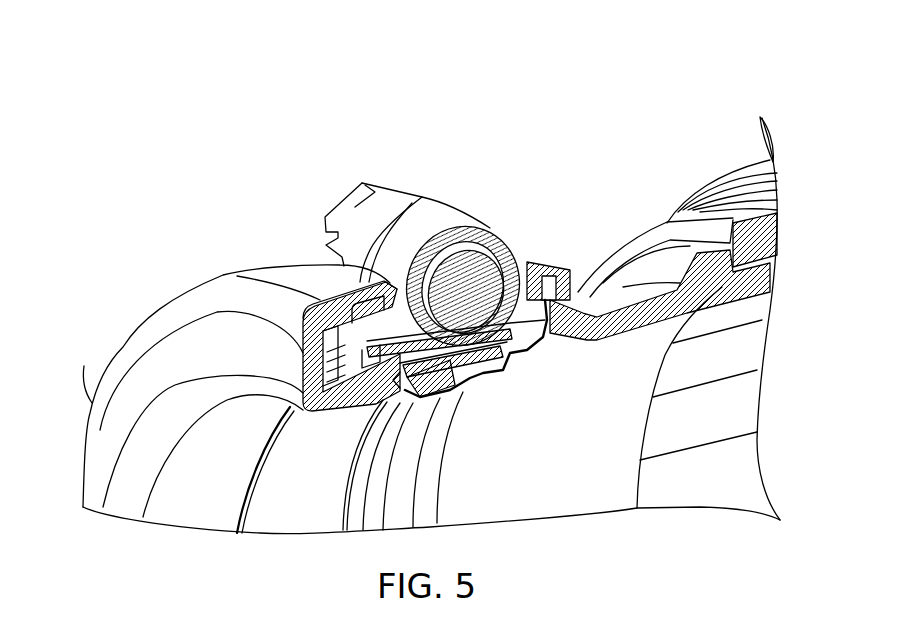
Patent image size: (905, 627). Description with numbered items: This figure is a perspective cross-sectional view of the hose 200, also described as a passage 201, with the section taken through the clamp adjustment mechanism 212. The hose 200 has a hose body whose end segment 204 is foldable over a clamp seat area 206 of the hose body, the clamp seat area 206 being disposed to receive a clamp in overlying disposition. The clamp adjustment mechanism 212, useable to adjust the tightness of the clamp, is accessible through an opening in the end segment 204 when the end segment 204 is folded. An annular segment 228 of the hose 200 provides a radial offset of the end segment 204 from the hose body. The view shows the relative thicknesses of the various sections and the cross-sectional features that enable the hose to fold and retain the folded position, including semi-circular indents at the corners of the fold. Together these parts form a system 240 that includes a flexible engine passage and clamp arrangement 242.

The hose 200 is at (772, 289).
The passage 201 is at (754, 107).
The end segment 204 is at (281, 273).
The clamp seat area 206 is at (507, 358).
The clamp adjustment mechanism 212 is at (354, 199).
The annular segment 228 is at (112, 424).
The system 240 is at (679, 92).
The flexible engine passage and clamp arrangement 242 is at (587, 146).